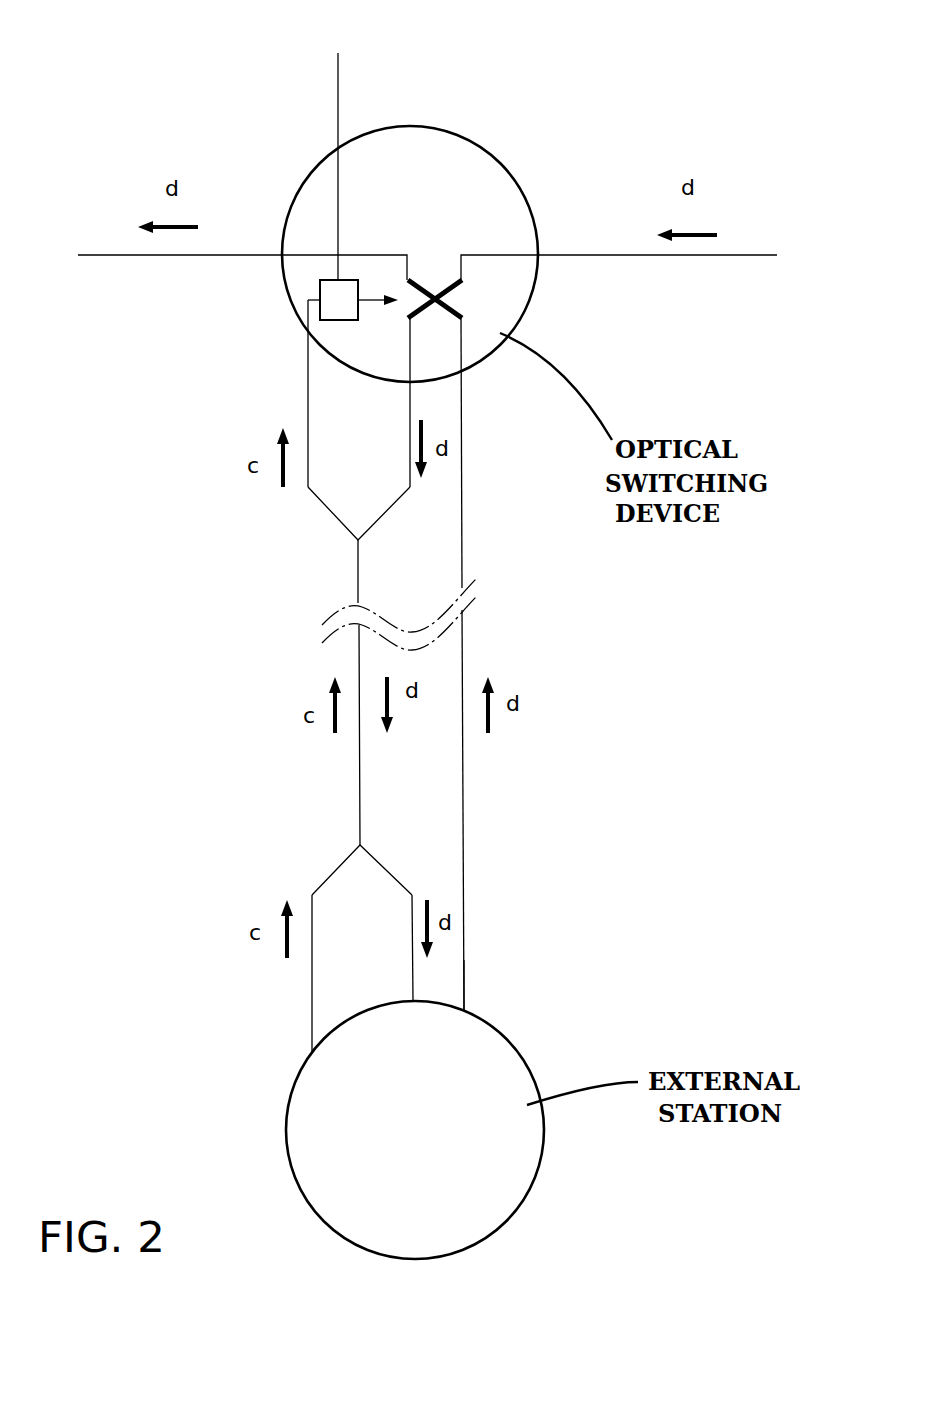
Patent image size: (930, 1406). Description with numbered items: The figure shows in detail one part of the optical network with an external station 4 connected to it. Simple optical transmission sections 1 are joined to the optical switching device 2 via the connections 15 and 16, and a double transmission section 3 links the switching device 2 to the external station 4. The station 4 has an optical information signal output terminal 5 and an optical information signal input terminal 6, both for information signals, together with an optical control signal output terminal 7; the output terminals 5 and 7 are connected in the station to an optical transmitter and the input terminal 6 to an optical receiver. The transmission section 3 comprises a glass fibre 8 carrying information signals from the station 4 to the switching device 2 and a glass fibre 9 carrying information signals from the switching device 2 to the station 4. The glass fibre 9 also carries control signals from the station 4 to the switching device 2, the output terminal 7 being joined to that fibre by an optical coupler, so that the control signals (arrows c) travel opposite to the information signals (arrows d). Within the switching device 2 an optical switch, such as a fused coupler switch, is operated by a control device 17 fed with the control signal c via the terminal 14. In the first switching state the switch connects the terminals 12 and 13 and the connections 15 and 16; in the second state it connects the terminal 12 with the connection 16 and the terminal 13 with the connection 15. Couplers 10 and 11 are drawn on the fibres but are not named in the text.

The simple optical transmission section 1 is at (170, 255).
The optical switching device 2 is at (410, 254).
The double transmission section 3 is at (413, 767).
The external station 4 is at (415, 1130).
The optical information signal output terminal 5 is at (465, 1010).
The optical information signal input terminal 6 is at (413, 1000).
The optical control signal output terminal 7 is at (312, 1052).
The glass fibre 8 is at (464, 715).
The glass fibre 9 is at (360, 723).
The optical coupler 10 is at (360, 845).
The optical coupler 11 is at (358, 540).
The terminal 12 is at (462, 380).
The terminal 13 is at (410, 387).
The terminal 14 is at (307, 333).
The connection 15 is at (537, 255).
The connection 16 is at (282, 255).
The control device 17 is at (337, 145).